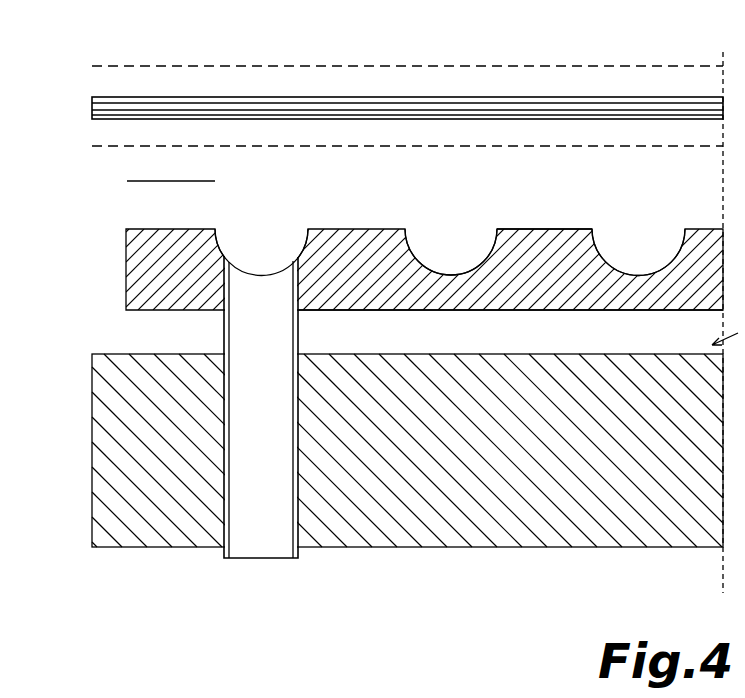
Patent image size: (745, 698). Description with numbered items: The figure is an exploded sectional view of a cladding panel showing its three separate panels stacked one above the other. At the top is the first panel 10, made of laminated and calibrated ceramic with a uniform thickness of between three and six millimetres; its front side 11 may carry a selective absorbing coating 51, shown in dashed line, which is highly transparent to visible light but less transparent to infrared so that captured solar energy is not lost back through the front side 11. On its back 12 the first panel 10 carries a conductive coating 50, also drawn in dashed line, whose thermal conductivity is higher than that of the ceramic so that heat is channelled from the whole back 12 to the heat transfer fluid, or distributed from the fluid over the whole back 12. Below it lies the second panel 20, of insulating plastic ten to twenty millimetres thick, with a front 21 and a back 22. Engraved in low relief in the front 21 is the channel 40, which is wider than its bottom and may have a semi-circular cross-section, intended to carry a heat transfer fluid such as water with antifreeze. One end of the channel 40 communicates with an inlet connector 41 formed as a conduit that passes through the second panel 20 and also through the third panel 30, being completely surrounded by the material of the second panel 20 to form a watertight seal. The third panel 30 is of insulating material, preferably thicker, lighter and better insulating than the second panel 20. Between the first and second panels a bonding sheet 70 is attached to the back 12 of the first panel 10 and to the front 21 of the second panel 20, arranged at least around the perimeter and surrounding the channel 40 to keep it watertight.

The first panel 10 is at (407, 67).
The front side of the first panel 11 is at (250, 97).
The back of the first panel 12 is at (326, 117).
The second panel 20 is at (354, 262).
The front of the second panel 21 is at (518, 229).
The back of the second panel 22 is at (570, 310).
The third panel 30 is at (540, 468).
The channel 40 is at (246, 262).
The inlet connector 41 is at (233, 326).
The conductive coating 50 is at (397, 146).
The selective absorbing coating 51 is at (484, 66).
The bonding sheet 70 is at (140, 181).